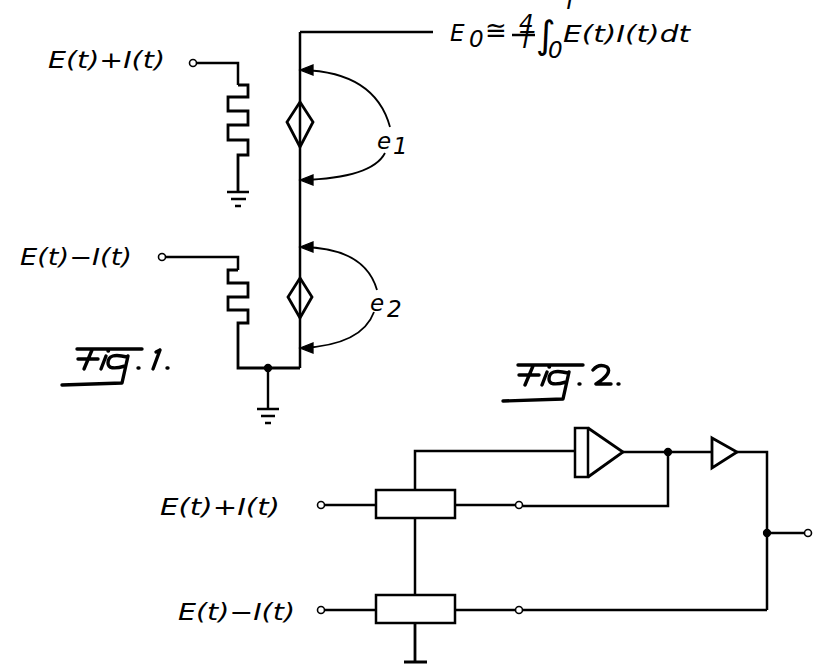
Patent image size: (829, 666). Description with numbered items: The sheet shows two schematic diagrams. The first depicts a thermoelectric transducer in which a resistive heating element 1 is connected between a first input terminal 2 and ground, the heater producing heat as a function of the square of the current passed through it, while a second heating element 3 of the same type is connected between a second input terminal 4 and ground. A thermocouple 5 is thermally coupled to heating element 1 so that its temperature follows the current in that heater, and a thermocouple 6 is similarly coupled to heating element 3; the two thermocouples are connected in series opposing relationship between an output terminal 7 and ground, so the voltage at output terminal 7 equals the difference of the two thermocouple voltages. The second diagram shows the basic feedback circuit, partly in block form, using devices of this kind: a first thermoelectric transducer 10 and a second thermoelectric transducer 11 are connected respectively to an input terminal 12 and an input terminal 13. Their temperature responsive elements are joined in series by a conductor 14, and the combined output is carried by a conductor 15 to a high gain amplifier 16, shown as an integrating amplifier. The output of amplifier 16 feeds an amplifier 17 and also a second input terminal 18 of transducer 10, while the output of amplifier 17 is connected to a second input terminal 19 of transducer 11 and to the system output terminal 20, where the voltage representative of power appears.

In FIG. 1, the resistive heating element 1 is at (229, 134).
In FIG. 1, the first input terminal 2 is at (192, 59).
In FIG. 1, the second heating element 3 is at (228, 305).
In FIG. 1, the second input terminal 4 is at (161, 253).
In FIG. 1, the thermocouple 5 is at (314, 122).
In FIG. 1, the thermocouple 6 is at (307, 289).
In FIG. 1, the output terminal 7 is at (433, 32).
In FIG. 2, the first thermoelectric transducer 10 is at (376, 518).
In FIG. 2, the second thermoelectric transducer 11 is at (376, 623).
In FIG. 2, the input terminal 12 is at (321, 501).
In FIG. 2, the input terminal 13 is at (321, 606).
In FIG. 2, the conductor 14 is at (417, 546).
In FIG. 2, the conductor 15 is at (466, 450).
In FIG. 2, the high gain amplifier 16 is at (604, 437).
In FIG. 2, the amplifier 17 is at (730, 440).
In FIG. 2, the second input terminal 18 is at (518, 509).
In FIG. 2, the second input terminal 19 is at (522, 606).
In FIG. 2, the system output terminal 20 is at (810, 537).